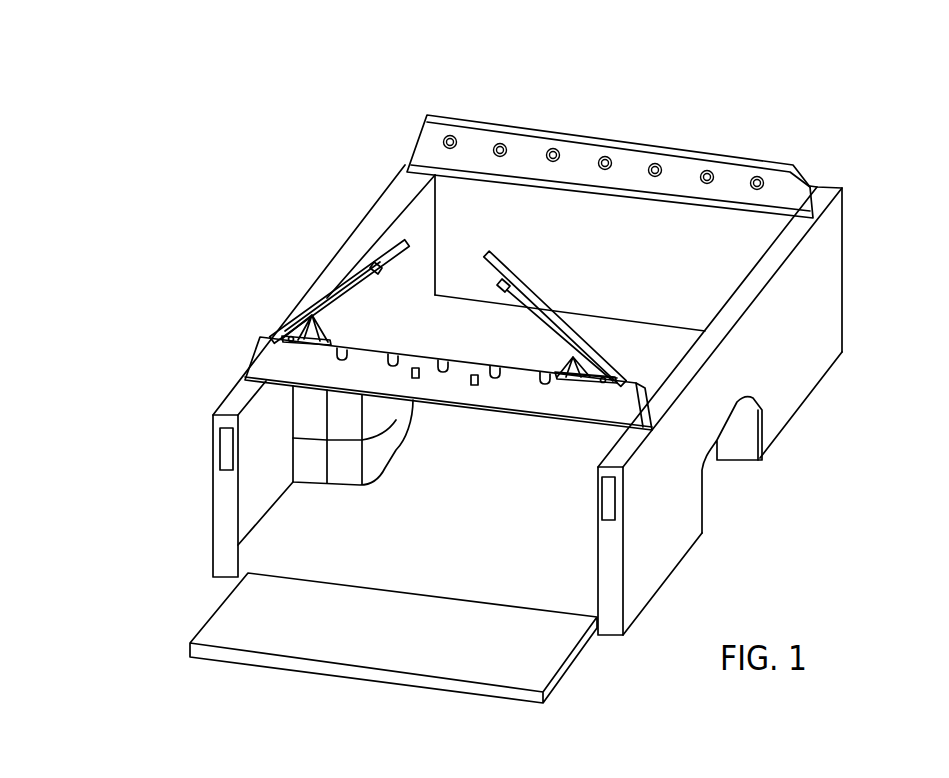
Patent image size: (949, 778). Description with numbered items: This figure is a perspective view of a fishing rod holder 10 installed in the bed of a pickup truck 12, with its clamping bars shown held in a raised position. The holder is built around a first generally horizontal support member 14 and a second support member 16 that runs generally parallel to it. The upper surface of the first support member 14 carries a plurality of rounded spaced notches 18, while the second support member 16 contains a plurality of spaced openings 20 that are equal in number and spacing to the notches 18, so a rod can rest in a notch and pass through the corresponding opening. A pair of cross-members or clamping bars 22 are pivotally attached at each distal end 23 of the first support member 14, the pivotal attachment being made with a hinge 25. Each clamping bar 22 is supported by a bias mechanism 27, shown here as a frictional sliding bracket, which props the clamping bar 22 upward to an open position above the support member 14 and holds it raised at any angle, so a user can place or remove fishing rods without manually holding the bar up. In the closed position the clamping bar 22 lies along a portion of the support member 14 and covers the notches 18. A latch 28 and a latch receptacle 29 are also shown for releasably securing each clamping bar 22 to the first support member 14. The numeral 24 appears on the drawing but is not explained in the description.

The fishing rod holder 10 is at (373, 118).
The pickup truck 12 is at (477, 516).
The first generally horizontal support member 14 is at (622, 410).
The second support member 16 is at (816, 186).
The rounded spaced notches 18 is at (443, 366).
The spaced openings 20 is at (591, 230).
The clamping bars 22 is at (533, 284).
The distal end 23 is at (628, 386).
The fastener openings 24 is at (500, 143).
The hinge 25 is at (386, 426).
The bias mechanism 27 is at (566, 385).
The latch 28 is at (363, 267).
The latch receptacle 29 is at (496, 368).